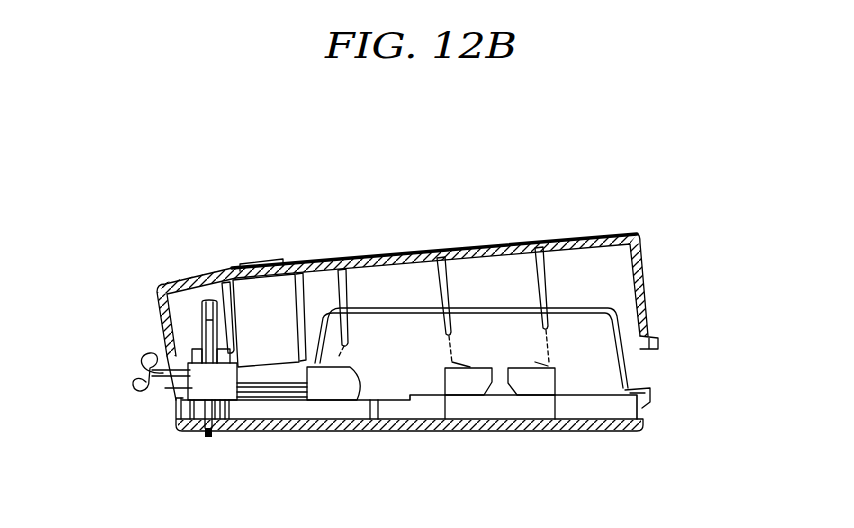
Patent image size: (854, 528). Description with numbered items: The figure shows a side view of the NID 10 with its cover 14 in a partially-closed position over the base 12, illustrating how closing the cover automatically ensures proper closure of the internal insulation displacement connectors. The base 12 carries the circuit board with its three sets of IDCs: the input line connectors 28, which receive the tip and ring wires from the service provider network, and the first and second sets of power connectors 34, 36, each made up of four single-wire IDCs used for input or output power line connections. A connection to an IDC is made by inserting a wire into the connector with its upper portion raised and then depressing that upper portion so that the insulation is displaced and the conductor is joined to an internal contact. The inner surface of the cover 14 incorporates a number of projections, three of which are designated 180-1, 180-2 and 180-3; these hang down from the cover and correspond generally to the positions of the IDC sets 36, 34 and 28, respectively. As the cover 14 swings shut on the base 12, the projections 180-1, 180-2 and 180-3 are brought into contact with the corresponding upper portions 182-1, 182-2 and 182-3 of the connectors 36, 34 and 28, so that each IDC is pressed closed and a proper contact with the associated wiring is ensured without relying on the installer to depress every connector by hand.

The NID 10 is at (158, 225).
The base 12 is at (563, 431).
The cover 14 is at (487, 243).
The input line connectors 28 is at (368, 400).
The first set of power connectors 34 is at (490, 396).
The second set of power connectors 36 is at (557, 384).
The projection 180-1 is at (542, 250).
The projection 180-2 is at (430, 258).
The projection 180-3 is at (333, 266).
The upper portion 182-1 is at (535, 362).
The upper portion 182-2 is at (450, 362).
The upper portion 182-3 is at (340, 357).